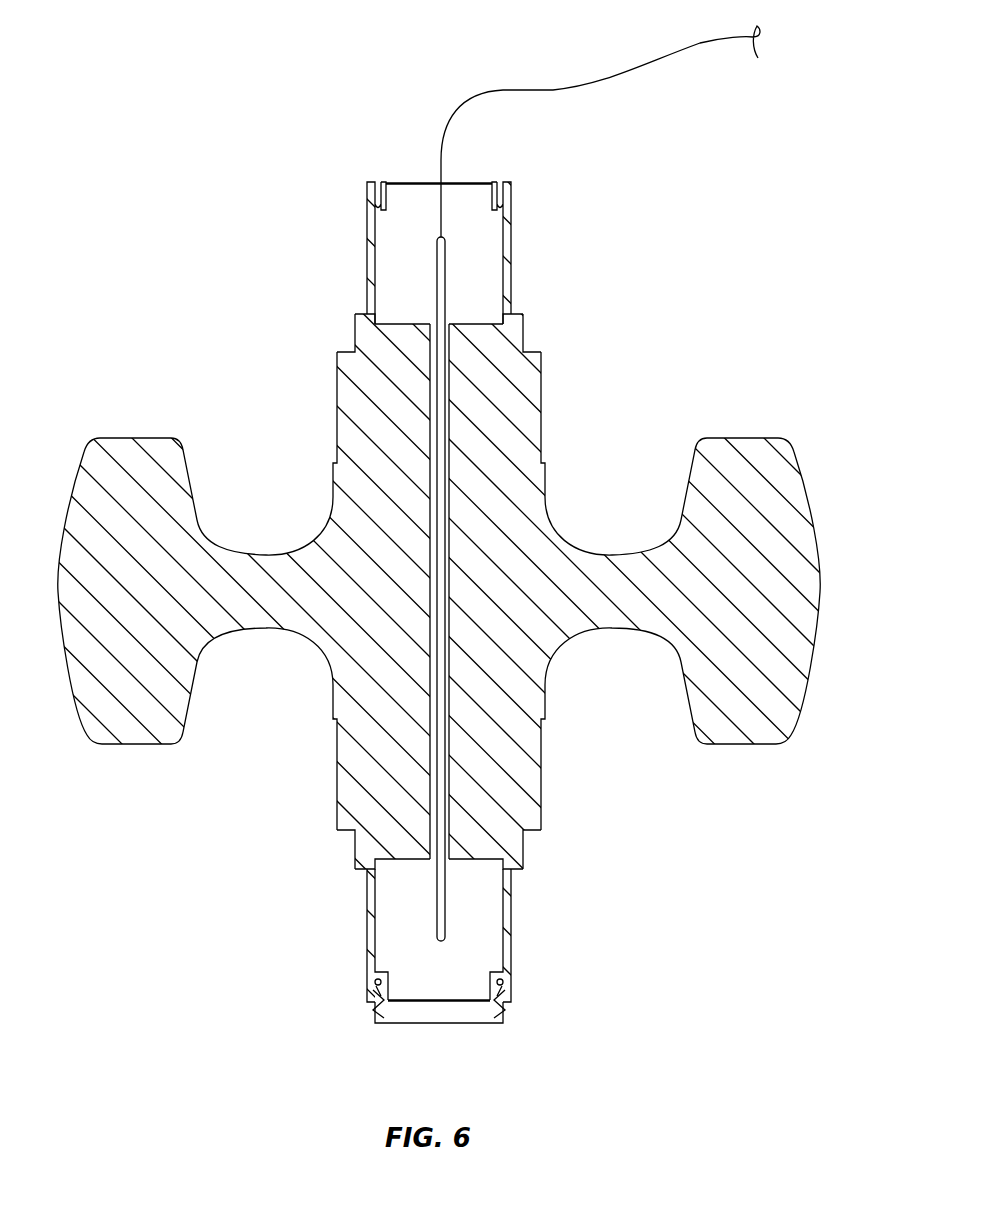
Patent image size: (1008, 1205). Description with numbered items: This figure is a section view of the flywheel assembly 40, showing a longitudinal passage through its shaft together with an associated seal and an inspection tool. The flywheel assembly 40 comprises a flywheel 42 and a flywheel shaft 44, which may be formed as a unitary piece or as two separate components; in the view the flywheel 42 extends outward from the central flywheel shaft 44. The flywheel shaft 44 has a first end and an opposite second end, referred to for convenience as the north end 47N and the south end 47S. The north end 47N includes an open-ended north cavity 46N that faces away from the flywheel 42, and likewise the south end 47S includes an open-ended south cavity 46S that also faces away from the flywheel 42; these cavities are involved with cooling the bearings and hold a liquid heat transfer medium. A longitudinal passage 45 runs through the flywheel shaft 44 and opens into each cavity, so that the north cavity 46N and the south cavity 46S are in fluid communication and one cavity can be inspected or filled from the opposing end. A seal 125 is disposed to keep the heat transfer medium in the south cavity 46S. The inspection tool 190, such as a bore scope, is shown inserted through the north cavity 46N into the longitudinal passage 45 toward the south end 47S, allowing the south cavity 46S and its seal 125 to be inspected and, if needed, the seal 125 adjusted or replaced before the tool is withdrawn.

The flywheel assembly 40 is at (456, 547).
The flywheel 42 is at (728, 666).
The flywheel shaft 44 is at (378, 423).
The longitudinal passage 45 is at (430, 470).
The north cavity 46N is at (485, 237).
The south cavity 46S is at (482, 935).
The north end 47N is at (530, 330).
The south end 47S is at (525, 850).
The seal 125 is at (477, 1013).
The inspection tool 190 is at (437, 445).